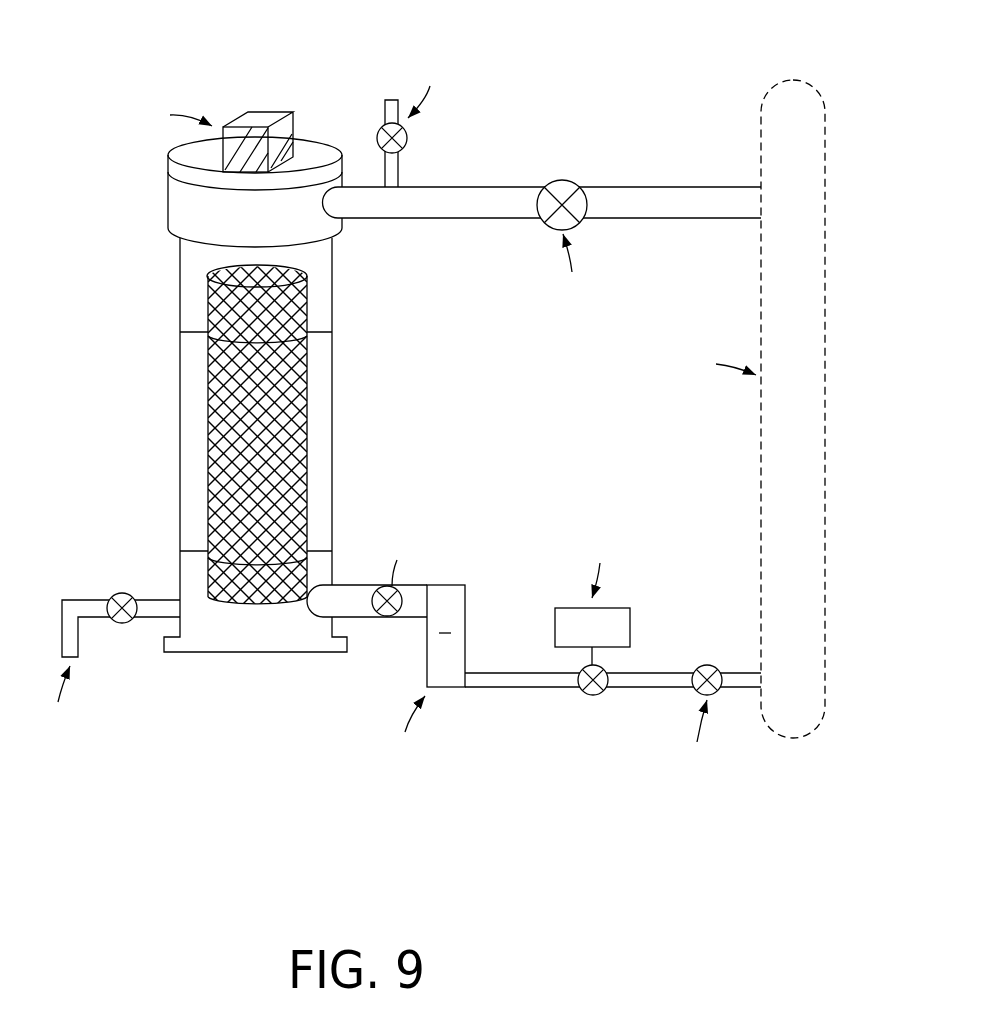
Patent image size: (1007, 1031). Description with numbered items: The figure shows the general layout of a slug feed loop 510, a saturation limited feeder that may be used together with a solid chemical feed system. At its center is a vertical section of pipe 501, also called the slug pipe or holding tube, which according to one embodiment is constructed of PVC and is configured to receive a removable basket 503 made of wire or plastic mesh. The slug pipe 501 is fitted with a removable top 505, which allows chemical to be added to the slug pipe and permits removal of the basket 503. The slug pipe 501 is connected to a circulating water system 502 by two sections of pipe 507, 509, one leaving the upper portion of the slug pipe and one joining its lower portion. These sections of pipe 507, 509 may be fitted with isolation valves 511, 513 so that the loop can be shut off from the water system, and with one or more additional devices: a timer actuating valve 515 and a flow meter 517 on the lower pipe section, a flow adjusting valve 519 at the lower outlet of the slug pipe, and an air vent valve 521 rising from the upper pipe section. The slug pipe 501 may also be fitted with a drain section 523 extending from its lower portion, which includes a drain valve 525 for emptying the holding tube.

The section of pipe 501 is at (332, 303).
The circulating water system 502 is at (757, 402).
The removable basket 503 is at (307, 434).
The removable top 505 is at (168, 170).
The section of pipe 507 is at (546, 785).
The section of pipe 509 is at (529, 110).
The slug feed loop 510 is at (116, 66).
The isolation valve 511 is at (713, 666).
The isolation valve 513 is at (562, 181).
The timer actuating valve 515 is at (591, 696).
The flow meter 517 is at (455, 689).
The flow adjusting valve 519 is at (387, 617).
The air vent valve 521 is at (408, 135).
The drain section 523 is at (48, 566).
The drain valve 525 is at (121, 593).